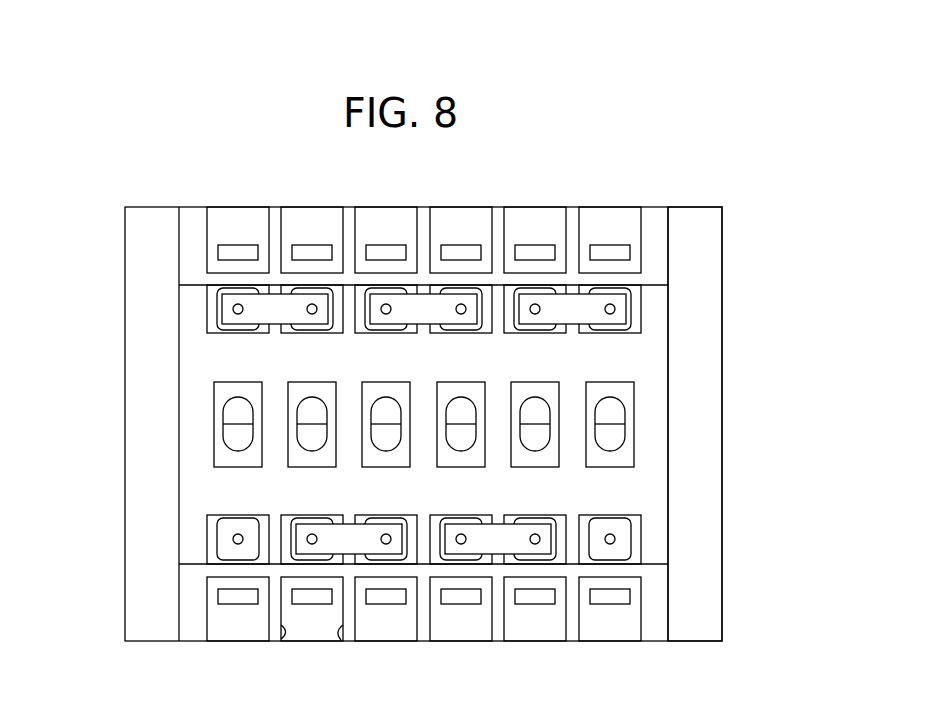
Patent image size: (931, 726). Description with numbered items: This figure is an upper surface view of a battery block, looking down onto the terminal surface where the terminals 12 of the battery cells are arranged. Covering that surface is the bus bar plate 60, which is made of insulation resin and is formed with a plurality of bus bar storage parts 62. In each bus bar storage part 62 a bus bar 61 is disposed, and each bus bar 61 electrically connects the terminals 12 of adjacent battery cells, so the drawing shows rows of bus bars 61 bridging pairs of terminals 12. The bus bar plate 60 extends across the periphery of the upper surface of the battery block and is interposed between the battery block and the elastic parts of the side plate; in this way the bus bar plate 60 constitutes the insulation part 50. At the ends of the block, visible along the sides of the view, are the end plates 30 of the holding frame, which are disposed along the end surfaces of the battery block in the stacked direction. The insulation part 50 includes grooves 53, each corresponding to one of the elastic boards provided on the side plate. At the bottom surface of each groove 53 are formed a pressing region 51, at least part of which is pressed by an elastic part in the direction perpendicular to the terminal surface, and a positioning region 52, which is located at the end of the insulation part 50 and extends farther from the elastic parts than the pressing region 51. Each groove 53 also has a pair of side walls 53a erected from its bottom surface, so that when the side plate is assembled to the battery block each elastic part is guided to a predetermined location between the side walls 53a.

The terminal 12 is at (223, 528).
The end plate 30 is at (698, 367).
The insulation part 50 is at (423, 424).
The pressing region 51 is at (455, 605).
The positioning region 52 is at (473, 628).
The groove 53 is at (307, 626).
The side wall 53a is at (281, 637).
The bus bar plate 60 is at (653, 247).
The bus bar 61 is at (422, 305).
The bus bar storage part 62 is at (357, 297).